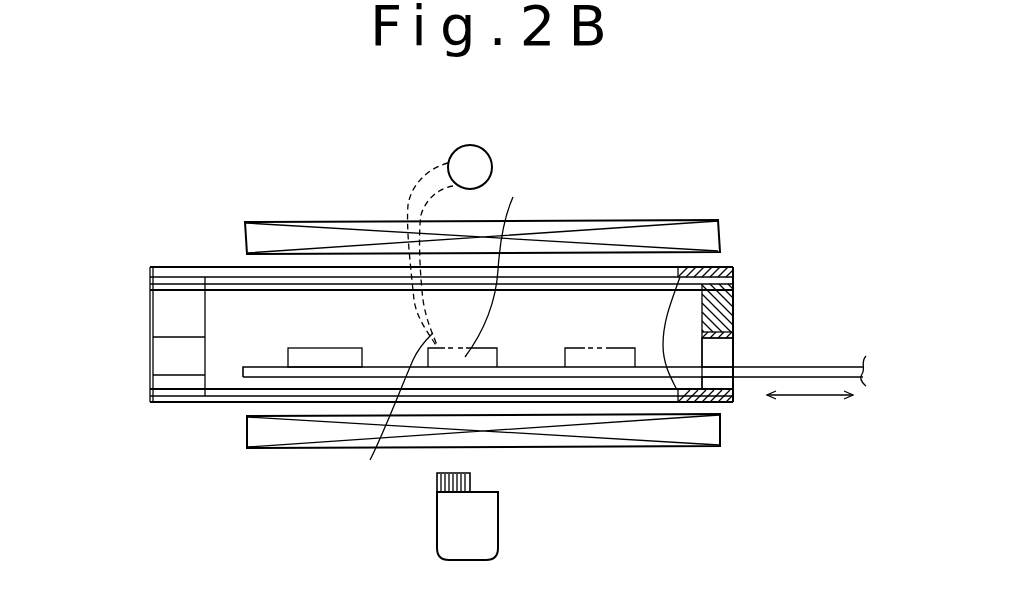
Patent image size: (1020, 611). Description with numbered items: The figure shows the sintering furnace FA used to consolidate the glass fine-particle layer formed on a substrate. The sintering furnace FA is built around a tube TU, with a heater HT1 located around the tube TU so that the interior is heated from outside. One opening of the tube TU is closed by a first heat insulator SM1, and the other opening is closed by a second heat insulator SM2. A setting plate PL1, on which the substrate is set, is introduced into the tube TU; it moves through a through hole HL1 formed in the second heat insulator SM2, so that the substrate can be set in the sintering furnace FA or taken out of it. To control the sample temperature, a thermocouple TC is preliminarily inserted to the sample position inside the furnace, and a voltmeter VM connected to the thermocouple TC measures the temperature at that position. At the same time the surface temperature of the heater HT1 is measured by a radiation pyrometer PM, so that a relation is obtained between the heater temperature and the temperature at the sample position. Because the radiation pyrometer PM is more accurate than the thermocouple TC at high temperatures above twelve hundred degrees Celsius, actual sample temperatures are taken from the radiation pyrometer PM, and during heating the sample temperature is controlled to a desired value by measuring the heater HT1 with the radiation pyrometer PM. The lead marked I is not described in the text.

The sintering furnace FA is at (333, 208).
The tube TU is at (228, 289).
The first heat insulator SM1 is at (177, 378).
The second heat insulator SM2 is at (735, 292).
The heater HT1 is at (655, 237).
The through hole HL1 is at (737, 345).
The setting plate PL1 is at (750, 383).
The voltmeter VM is at (497, 127).
The current lead I is at (498, 262).
The thermocouple TC is at (387, 414).
The radiation pyrometer PM is at (485, 523).